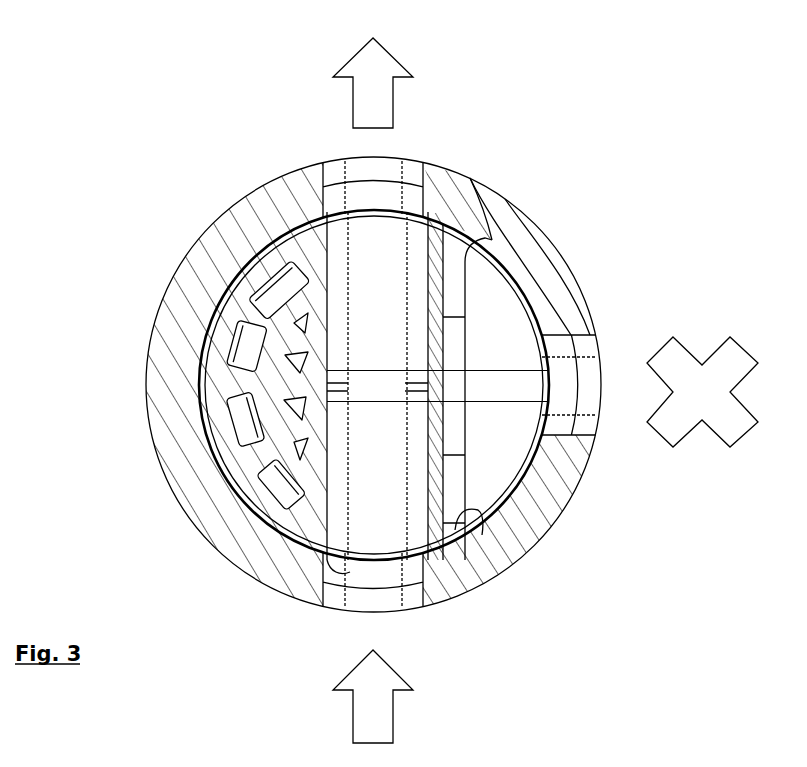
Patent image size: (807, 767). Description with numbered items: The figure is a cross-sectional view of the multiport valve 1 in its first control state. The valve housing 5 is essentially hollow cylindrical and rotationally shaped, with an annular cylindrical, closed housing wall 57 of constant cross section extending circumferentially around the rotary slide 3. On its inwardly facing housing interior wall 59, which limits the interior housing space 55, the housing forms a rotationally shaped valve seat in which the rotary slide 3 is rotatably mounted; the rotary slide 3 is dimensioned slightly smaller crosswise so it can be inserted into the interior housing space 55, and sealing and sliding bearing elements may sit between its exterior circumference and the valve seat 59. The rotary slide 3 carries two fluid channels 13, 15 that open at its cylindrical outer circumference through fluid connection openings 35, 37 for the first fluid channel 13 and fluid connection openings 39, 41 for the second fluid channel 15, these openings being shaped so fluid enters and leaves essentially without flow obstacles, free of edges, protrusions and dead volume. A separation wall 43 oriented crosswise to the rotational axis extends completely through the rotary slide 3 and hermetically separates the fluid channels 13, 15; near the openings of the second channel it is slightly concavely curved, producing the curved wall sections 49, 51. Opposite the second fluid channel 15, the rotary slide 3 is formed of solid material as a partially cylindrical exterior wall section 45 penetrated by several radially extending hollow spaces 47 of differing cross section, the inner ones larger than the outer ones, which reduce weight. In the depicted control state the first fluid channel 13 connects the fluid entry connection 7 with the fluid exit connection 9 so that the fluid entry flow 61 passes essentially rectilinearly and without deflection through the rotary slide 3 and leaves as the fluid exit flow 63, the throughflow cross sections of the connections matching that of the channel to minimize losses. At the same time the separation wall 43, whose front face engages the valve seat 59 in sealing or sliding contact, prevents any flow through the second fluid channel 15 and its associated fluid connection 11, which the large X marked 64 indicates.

The multiport valve 1 is at (630, 145).
The rotary slide 3 is at (293, 240).
The valve housing 5 is at (262, 205).
The fluid entry connection 7 is at (428, 614).
The fluid exit connection 9 is at (408, 158).
The fluid connection 11 is at (605, 348).
The first fluid channel 13 is at (380, 516).
The second fluid channel 15 is at (515, 430).
The fluid connection opening 35 is at (326, 568).
The fluid connection opening 37 is at (425, 200).
The fluid connection opening 39 is at (467, 542).
The fluid connection opening 41 is at (485, 238).
The separation wall 43 is at (433, 343).
The exterior wall section 45 is at (265, 497).
The hollow spaces 47 is at (262, 470).
The curved wall section 49 is at (500, 557).
The curved wall section 51 is at (505, 256).
The interior housing space 55 is at (228, 288).
The housing wall 57 is at (173, 302).
The housing interior wall / valve seat 59 is at (228, 288).
The fluid entry flow 61 is at (383, 703).
The fluid exit flow 63 is at (385, 65).
The prevented fluid flow indication 64 is at (730, 367).